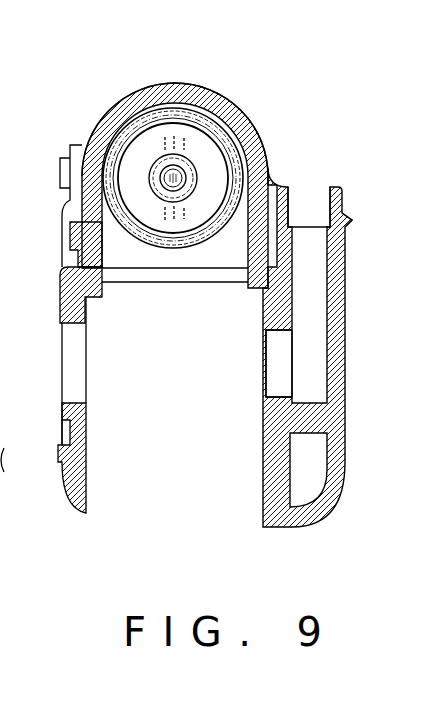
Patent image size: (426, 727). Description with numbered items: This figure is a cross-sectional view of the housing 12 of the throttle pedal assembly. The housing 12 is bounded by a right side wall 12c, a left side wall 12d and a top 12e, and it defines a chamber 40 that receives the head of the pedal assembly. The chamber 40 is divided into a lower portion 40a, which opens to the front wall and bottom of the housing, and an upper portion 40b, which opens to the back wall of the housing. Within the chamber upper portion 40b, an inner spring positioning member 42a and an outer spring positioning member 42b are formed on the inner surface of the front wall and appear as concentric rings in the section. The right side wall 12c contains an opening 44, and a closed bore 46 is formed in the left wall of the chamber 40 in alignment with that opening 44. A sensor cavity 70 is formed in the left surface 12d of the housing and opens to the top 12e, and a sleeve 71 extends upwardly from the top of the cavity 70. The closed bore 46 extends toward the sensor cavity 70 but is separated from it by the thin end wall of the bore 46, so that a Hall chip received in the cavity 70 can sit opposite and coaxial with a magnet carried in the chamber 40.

The housing 12 is at (198, 281).
The right side wall 12c is at (62, 415).
The left side wall 12d is at (345, 300).
The top 12e is at (163, 84).
The chamber 40 is at (128, 351).
The lower portion 40a is at (177, 458).
The upper portion 40b is at (113, 252).
The inner spring positioning member 42a is at (183, 190).
The outer spring positioning member 42b is at (140, 240).
The opening 44 is at (70, 324).
The closed bore 46 is at (280, 332).
The sensor cavity 70 is at (310, 203).
The sleeve 71 is at (340, 205).